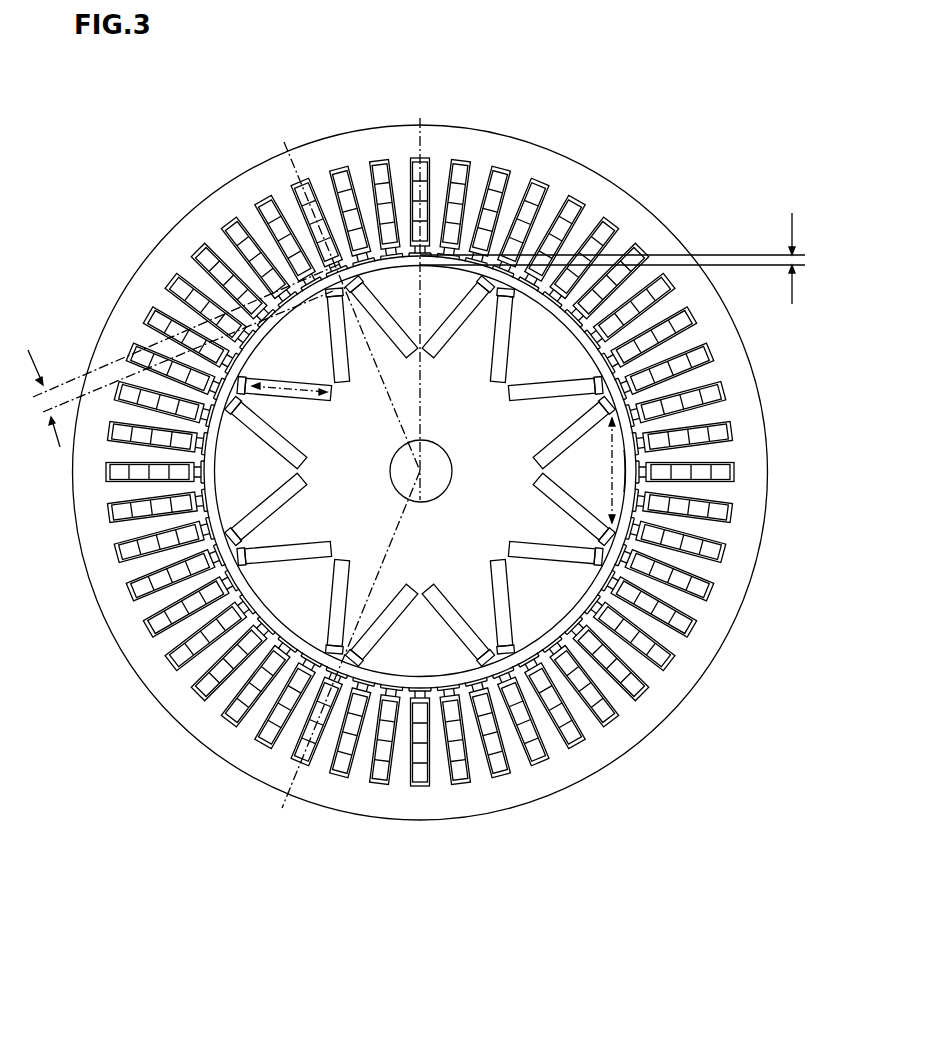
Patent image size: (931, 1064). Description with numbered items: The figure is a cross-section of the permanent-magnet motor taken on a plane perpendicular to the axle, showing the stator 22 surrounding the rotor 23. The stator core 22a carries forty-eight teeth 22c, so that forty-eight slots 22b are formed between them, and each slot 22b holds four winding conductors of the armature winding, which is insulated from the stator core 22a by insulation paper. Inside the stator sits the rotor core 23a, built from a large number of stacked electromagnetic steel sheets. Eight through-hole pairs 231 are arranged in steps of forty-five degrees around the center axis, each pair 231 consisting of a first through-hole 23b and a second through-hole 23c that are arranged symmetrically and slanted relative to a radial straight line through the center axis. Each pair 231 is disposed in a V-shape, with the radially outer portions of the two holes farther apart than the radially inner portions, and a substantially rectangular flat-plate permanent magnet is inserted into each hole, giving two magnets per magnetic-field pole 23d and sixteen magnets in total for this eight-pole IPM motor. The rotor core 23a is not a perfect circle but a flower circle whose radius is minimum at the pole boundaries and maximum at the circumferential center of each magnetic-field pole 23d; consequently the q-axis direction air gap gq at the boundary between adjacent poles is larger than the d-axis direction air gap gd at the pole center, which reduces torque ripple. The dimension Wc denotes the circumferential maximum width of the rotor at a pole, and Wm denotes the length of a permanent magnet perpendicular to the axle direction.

The stator 22 is at (420, 457).
The stator core 22a is at (173, 233).
The slots 22b is at (620, 228).
The teeth 22c is at (543, 228).
The rotor 23 is at (517, 516).
The rotor core 23a is at (558, 607).
The first through-hole 23b is at (390, 617).
The second through-hole 23c is at (328, 607).
The magnetic-field pole 23d is at (622, 456).
The through-hole pairs 231 is at (342, 706).
The d-axis direction air gap gd is at (623, 258).
The q-axis direction air gap gq is at (184, 355).
The length of the permanent magnet Wm is at (273, 391).
The circumferential-direction maximum width Wc is at (608, 447).